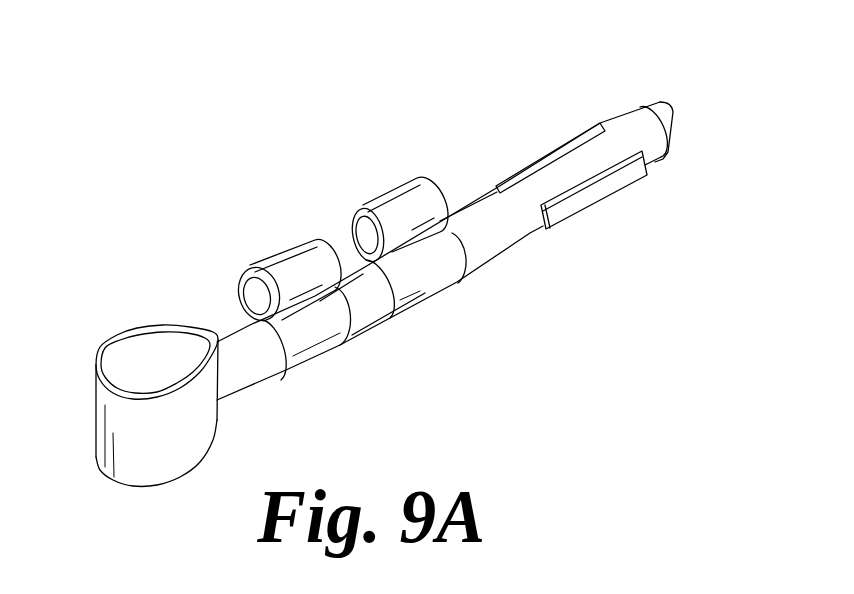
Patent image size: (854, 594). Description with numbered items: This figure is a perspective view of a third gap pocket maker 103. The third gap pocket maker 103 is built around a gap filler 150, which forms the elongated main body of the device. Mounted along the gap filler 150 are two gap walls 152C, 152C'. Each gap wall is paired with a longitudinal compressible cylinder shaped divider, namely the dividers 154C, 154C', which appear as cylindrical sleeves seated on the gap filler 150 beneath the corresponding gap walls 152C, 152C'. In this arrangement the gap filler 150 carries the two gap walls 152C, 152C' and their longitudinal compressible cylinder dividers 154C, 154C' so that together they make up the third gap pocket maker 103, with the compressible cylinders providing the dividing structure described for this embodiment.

The third gap pocket maker 103 is at (398, 269).
The gap filler 150 is at (555, 172).
The gap wall 152C is at (235, 245).
The longitudinal compressible cylinder divider 154C is at (240, 313).
The gap wall 152C' is at (349, 184).
The longitudinal compressible cylinder divider 154C' is at (468, 198).